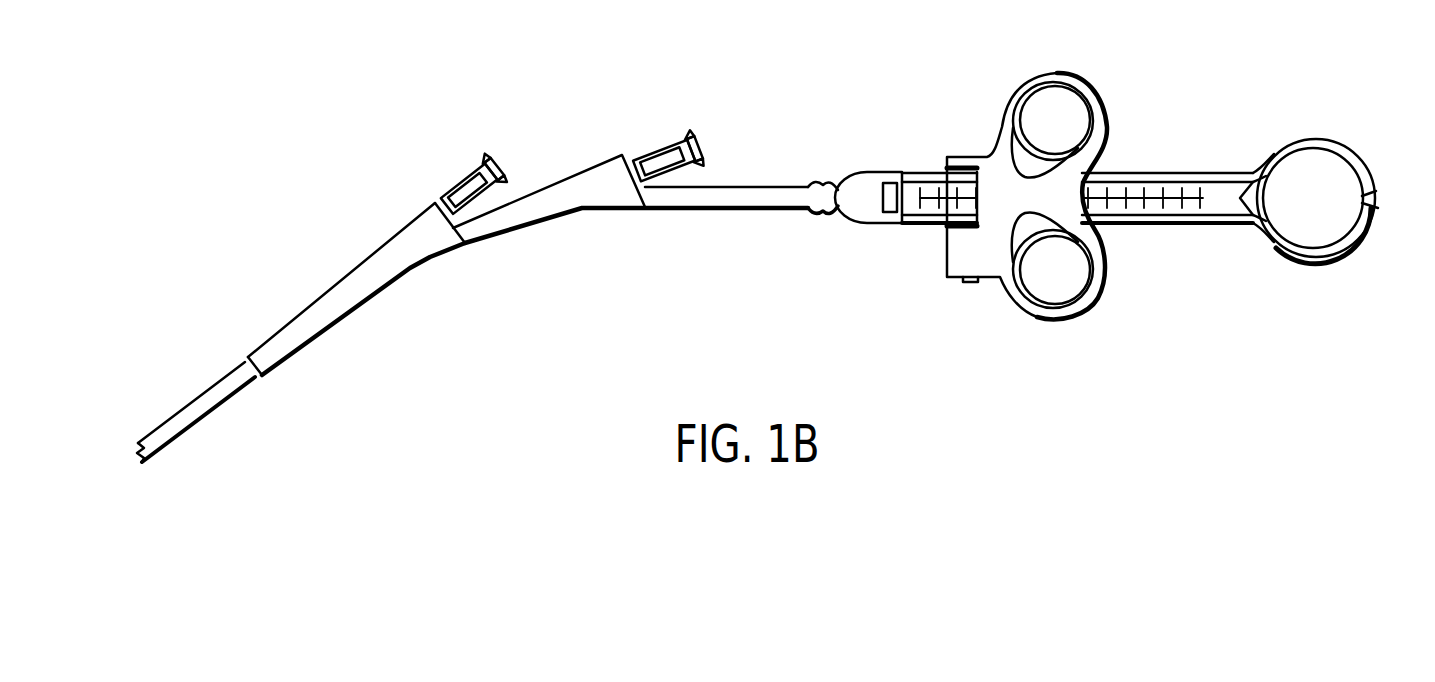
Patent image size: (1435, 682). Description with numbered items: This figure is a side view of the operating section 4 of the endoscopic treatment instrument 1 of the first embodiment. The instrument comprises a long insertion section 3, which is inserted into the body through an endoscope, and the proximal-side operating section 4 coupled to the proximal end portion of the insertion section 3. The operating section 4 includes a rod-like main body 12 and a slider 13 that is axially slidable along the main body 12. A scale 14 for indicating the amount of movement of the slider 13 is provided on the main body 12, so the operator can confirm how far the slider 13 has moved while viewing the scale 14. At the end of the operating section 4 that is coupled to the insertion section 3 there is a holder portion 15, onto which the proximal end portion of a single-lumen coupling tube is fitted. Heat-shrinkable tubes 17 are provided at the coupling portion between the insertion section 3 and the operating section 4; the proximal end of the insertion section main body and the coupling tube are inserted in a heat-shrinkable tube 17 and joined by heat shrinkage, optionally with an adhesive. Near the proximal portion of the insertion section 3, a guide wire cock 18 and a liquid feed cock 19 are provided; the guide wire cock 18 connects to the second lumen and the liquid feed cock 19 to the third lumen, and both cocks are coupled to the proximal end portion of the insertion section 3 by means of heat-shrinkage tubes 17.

The endoscopic treatment instrument 1 is at (312, 232).
The insertion section 3 is at (209, 422).
The operating section 4 is at (902, 312).
The main body 12 is at (1235, 206).
The slider 13 is at (1053, 72).
The scale 14 is at (1153, 206).
The holder portion 15 is at (862, 216).
The heat-shrinkable tube 17 is at (425, 252).
The guide wire cock 18 is at (463, 178).
The liquid feed cock 19 is at (705, 141).